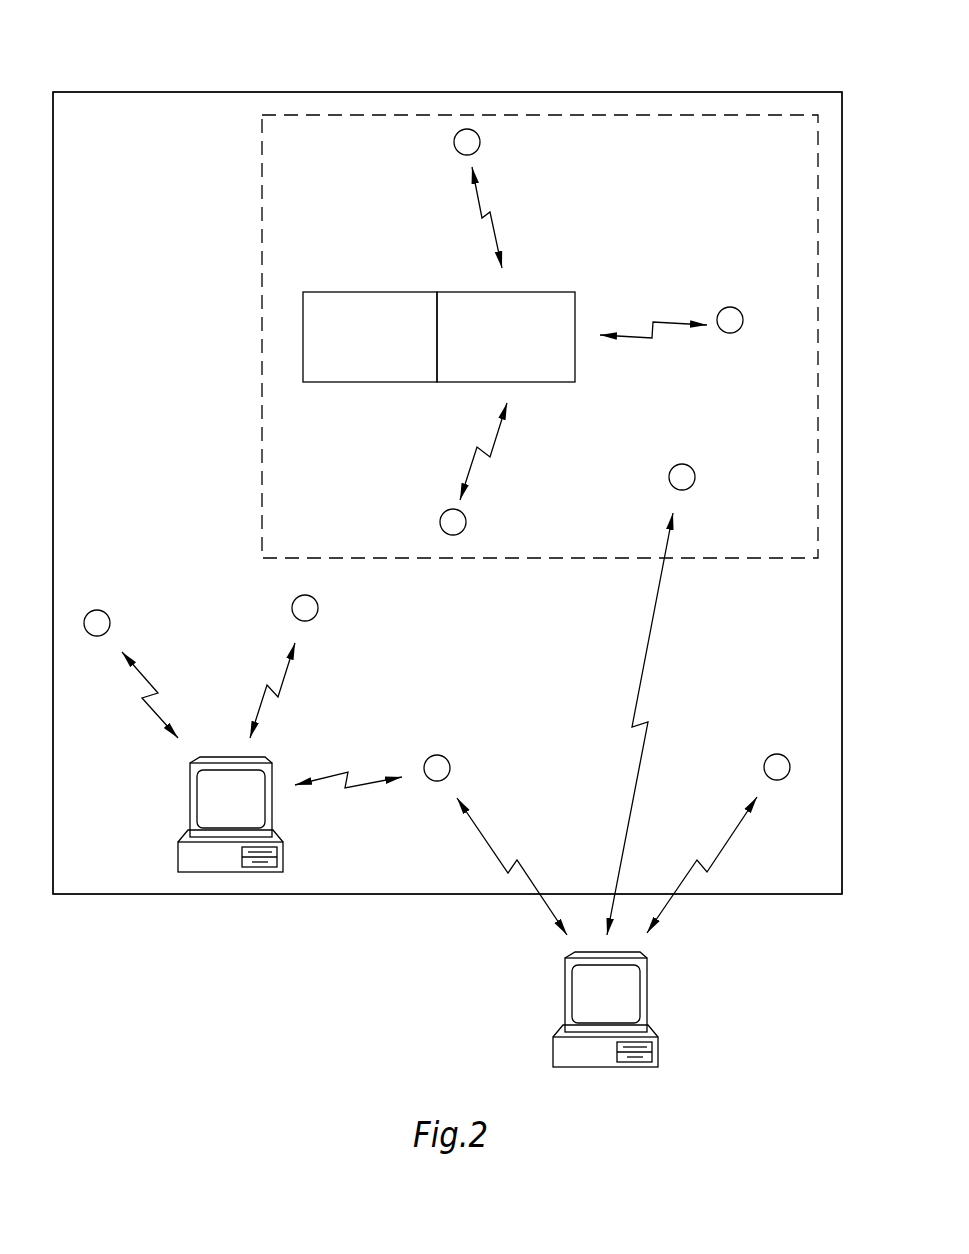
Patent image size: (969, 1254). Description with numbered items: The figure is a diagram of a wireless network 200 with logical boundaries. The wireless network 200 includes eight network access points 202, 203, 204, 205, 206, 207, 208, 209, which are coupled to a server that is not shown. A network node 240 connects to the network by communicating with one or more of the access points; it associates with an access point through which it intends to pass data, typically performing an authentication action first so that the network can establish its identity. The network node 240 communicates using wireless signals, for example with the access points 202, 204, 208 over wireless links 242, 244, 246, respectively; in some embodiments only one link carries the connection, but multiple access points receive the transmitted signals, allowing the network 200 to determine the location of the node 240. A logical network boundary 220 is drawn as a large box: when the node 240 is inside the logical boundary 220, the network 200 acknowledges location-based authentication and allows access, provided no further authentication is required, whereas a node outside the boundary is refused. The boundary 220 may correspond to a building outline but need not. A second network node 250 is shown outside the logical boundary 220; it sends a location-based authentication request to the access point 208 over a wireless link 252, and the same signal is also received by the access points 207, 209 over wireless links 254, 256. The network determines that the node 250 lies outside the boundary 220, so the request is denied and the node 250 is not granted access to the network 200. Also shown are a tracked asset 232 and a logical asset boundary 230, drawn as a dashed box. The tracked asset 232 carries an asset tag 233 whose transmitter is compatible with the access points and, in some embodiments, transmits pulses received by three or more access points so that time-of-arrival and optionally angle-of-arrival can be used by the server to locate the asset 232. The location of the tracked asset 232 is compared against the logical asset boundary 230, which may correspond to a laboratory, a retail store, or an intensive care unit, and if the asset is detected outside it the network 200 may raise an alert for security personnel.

The wireless network 200 is at (782, 38).
The logical network boundary 220 is at (447, 92).
The logical asset boundary 230 is at (261, 338).
The tracked asset 232 is at (432, 292).
The asset tag 233 is at (567, 292).
The network access point 202 is at (111, 621).
The network access point 203 is at (481, 139).
The network access point 204 is at (319, 606).
The network access point 205 is at (731, 307).
The network access point 206 is at (440, 522).
The network access point 207 is at (668, 477).
The network access point 208 is at (437, 755).
The network access point 209 is at (778, 754).
The network node 240 is at (190, 798).
The wireless link 242 is at (147, 680).
The wireless link 244 is at (285, 682).
The wireless link 246 is at (360, 787).
The network node 250 is at (566, 993).
The wireless link 252 is at (488, 845).
The wireless link 254 is at (650, 627).
The wireless link 256 is at (725, 846).